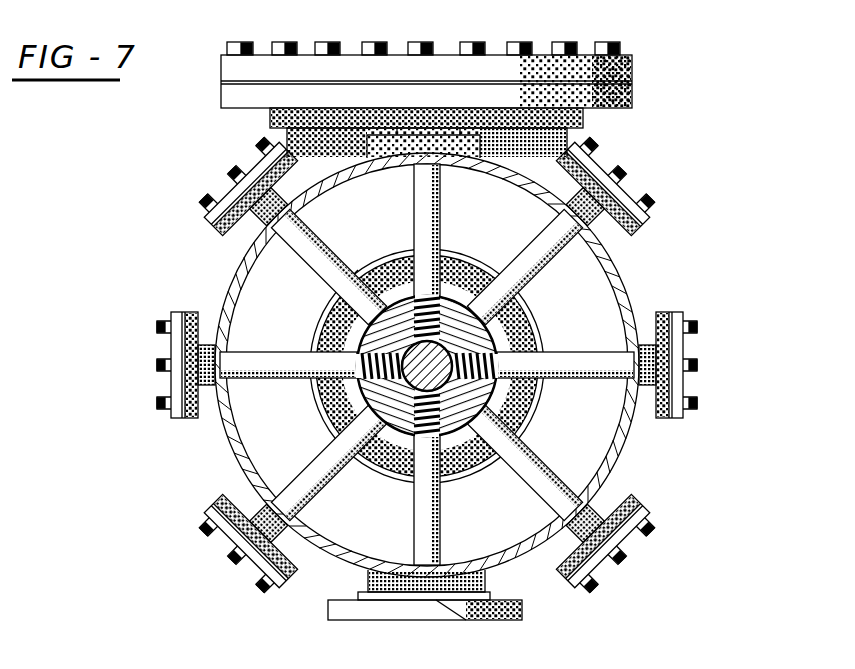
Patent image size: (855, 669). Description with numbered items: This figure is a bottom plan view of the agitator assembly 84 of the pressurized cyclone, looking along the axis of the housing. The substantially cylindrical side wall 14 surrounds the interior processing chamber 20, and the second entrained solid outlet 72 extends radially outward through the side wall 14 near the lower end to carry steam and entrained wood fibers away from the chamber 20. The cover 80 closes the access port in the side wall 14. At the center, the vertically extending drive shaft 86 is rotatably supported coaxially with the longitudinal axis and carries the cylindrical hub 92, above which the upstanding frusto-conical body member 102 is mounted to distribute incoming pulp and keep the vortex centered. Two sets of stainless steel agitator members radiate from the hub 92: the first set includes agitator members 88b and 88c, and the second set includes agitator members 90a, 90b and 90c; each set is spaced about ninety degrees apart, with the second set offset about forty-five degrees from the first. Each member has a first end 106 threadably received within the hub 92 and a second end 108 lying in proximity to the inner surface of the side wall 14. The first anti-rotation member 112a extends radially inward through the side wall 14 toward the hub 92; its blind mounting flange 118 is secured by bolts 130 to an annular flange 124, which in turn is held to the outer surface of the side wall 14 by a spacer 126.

The side wall 14 is at (285, 186).
The interior processing chamber 20 is at (427, 395).
The second entrained solid outlet 72 is at (440, 615).
The cover 80 is at (405, 65).
The agitator assembly 84 is at (612, 20).
The drive shaft 86 is at (446, 392).
The agitator member 88b is at (568, 248).
The agitator member 88c is at (544, 463).
The agitator member 90a is at (306, 352).
The agitator member 90b is at (444, 214).
The agitator member 90c is at (568, 353).
The cylindrical hub 92 is at (522, 396).
The frusto-conical body member 102 is at (385, 258).
The first end 106 is at (486, 264).
The second end 108 is at (427, 395).
The first anti-rotation member 112a is at (350, 280).
The blind mounting flange 118 is at (165, 246).
The annular flange 124 is at (236, 245).
The spacer 126 is at (270, 246).
The bolts 130 is at (248, 156).